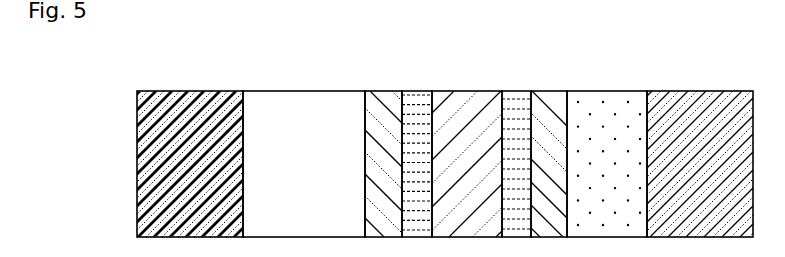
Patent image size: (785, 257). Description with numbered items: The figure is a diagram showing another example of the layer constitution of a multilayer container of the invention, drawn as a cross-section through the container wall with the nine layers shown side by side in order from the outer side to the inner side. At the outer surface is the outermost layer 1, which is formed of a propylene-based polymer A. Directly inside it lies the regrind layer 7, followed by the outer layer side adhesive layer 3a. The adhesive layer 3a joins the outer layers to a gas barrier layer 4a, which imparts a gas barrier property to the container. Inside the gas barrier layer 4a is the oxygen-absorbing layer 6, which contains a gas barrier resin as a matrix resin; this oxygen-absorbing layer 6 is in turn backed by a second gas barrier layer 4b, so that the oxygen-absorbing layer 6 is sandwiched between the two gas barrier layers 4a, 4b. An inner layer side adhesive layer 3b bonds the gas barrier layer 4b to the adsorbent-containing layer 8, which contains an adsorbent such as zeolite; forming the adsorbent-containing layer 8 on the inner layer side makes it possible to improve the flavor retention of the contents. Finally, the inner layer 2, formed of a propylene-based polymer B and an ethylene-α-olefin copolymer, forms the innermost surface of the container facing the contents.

The outermost layer 1 is at (189, 100).
The regrind layer 7 is at (306, 103).
The outer layer side adhesive layer 3a is at (385, 105).
The gas barrier layer 4a is at (422, 103).
The oxygen-absorbing layer 6 is at (470, 102).
The gas barrier layer 4b is at (520, 102).
The inner layer side adhesive layer 3b is at (557, 105).
The adsorbent-containing layer 8 is at (605, 103).
The inner layer 2 is at (703, 102).